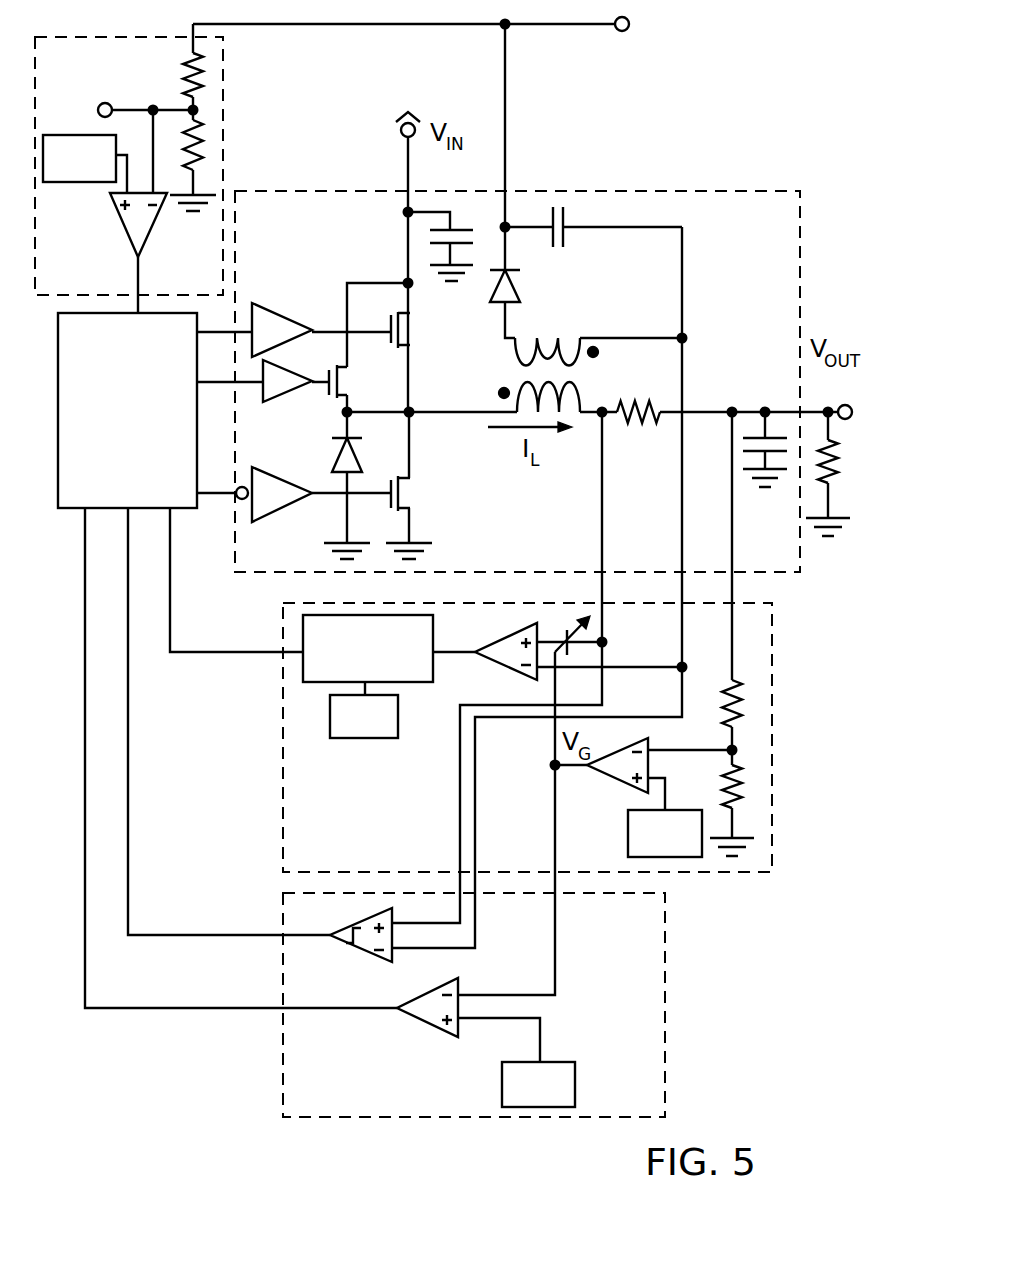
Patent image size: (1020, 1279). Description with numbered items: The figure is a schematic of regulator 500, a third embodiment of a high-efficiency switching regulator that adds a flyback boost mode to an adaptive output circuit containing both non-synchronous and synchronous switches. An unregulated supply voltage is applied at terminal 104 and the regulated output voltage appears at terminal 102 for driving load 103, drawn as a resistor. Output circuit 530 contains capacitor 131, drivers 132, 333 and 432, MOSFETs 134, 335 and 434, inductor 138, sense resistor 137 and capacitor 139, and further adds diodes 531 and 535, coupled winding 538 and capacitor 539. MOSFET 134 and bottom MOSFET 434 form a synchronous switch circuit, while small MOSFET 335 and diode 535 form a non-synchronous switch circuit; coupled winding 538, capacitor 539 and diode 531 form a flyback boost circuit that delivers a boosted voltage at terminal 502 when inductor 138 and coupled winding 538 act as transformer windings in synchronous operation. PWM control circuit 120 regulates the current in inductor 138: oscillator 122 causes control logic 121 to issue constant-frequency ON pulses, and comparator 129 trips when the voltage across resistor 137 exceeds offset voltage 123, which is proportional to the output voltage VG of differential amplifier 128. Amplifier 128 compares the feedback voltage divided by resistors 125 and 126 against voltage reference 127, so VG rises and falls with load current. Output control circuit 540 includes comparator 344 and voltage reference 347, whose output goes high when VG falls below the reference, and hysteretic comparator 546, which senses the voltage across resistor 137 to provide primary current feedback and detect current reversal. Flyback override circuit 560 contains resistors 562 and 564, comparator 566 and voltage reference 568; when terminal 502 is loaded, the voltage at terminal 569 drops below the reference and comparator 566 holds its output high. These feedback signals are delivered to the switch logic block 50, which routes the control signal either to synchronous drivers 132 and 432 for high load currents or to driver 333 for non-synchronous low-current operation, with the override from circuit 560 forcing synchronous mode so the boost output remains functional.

The switch logic 50 is at (100, 510).
The output terminal 102 is at (840, 405).
The load 103 is at (828, 485).
The input terminal 104 is at (401, 128).
The PWM control circuit 120 is at (773, 695).
The control logic 121 is at (450, 637).
The oscillator 122 is at (390, 740).
The controllable offset voltage 123 is at (570, 655).
The resistor 125 is at (730, 690).
The resistor 126 is at (728, 792).
The voltage reference 127 is at (628, 825).
The differential amplifier 128 is at (617, 779).
The comparator 129 is at (517, 672).
The capacitor 131 is at (482, 222).
The driver 132 is at (280, 312).
The MOSFET 134 is at (400, 329).
The sense resistor 137 is at (618, 405).
The inductor 138 is at (530, 380).
The capacitor 139 is at (743, 438).
The driver 333 is at (290, 372).
The MOSFET 335 is at (347, 385).
The comparator 344 is at (432, 1025).
The voltage reference 347 is at (602, 1088).
The driver 432 is at (270, 470).
The bottom MOSFET 434 is at (402, 495).
The regulator 500 is at (785, 153).
The boost output terminal 502 is at (629, 27).
The output circuit 530 is at (800, 229).
The diode 531 is at (545, 291).
The diode 535 is at (362, 465).
The coupled winding 538 is at (540, 345).
The capacitor 539 is at (565, 240).
The output control circuit 540 is at (665, 988).
The hysteretic comparator 546 is at (362, 949).
The flyback override circuit 560 is at (152, 36).
The resistor 562 is at (190, 57).
The resistor 564 is at (198, 143).
The comparator 566 is at (153, 226).
The voltage reference 568 is at (102, 183).
The terminal 569 is at (105, 102).